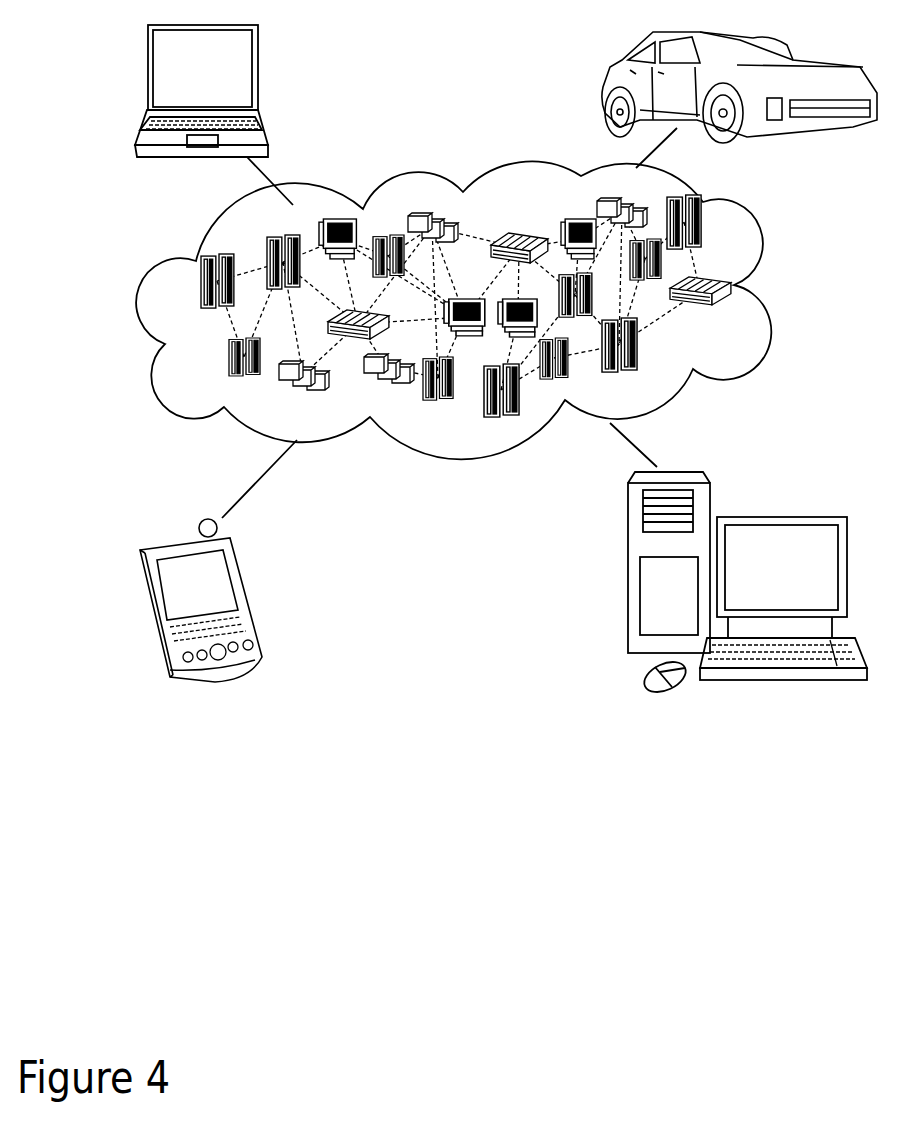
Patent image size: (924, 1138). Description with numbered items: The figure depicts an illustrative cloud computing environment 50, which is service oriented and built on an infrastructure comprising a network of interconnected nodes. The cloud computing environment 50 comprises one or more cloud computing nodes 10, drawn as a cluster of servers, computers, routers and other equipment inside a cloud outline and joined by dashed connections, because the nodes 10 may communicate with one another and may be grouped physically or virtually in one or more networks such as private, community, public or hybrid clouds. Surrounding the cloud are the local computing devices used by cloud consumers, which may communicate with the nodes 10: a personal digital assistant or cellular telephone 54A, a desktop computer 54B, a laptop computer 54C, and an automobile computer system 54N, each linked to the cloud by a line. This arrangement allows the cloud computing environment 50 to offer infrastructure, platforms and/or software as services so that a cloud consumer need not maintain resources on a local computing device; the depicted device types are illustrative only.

The cloud computing node 10 is at (733, 313).
The cloud computing environment 50 is at (776, 288).
The personal digital assistant or cellular telephone 54A is at (248, 590).
The desktop computer 54B is at (777, 516).
The laptop computer 54C is at (259, 73).
The automobile computer system 54N is at (607, 87).